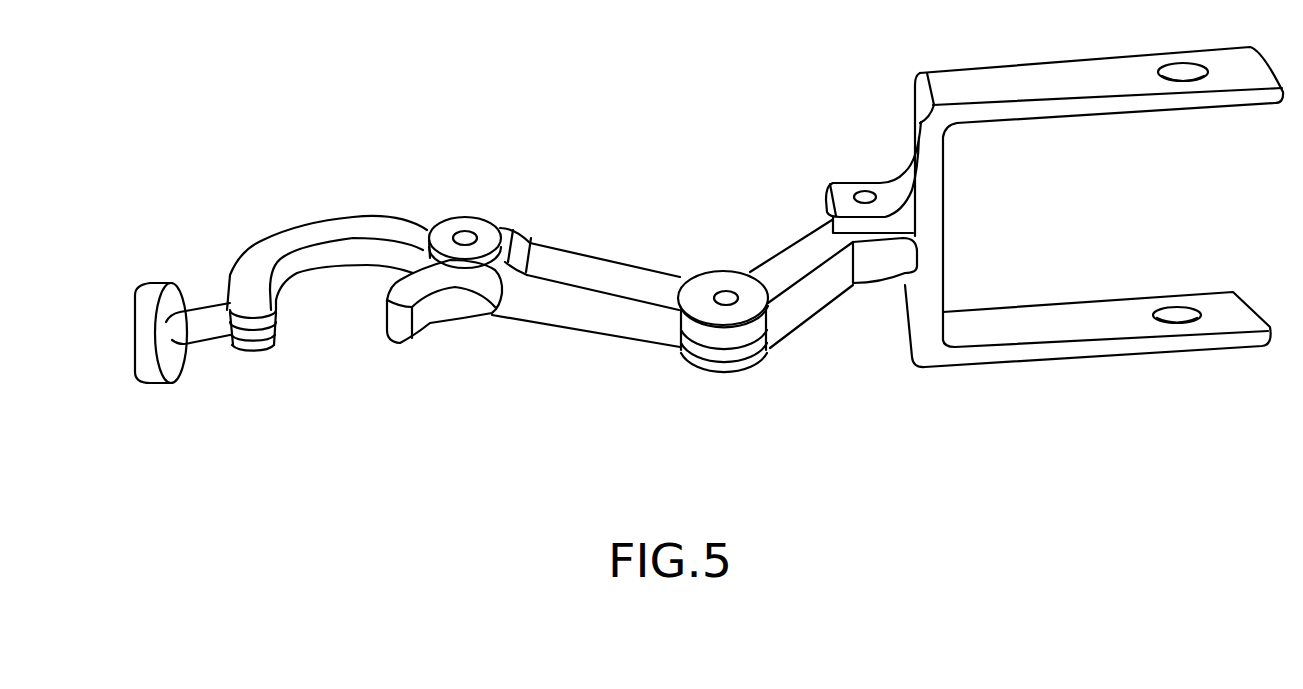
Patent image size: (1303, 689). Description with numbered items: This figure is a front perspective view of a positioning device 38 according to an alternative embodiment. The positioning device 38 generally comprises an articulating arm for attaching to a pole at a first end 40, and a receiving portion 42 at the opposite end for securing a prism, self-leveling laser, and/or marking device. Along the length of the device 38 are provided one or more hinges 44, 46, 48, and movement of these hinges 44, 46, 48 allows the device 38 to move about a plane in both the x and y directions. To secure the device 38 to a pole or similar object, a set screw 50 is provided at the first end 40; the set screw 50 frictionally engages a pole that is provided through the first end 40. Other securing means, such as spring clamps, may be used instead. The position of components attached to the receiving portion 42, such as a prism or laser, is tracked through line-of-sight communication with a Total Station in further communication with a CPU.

The positioning device 38 is at (526, 345).
The first end 40 is at (270, 370).
The receiving portion 42 is at (1054, 207).
The hinge 44 is at (480, 226).
The hinge 46 is at (718, 283).
The hinge 48 is at (847, 188).
The set screw 50 is at (180, 285).